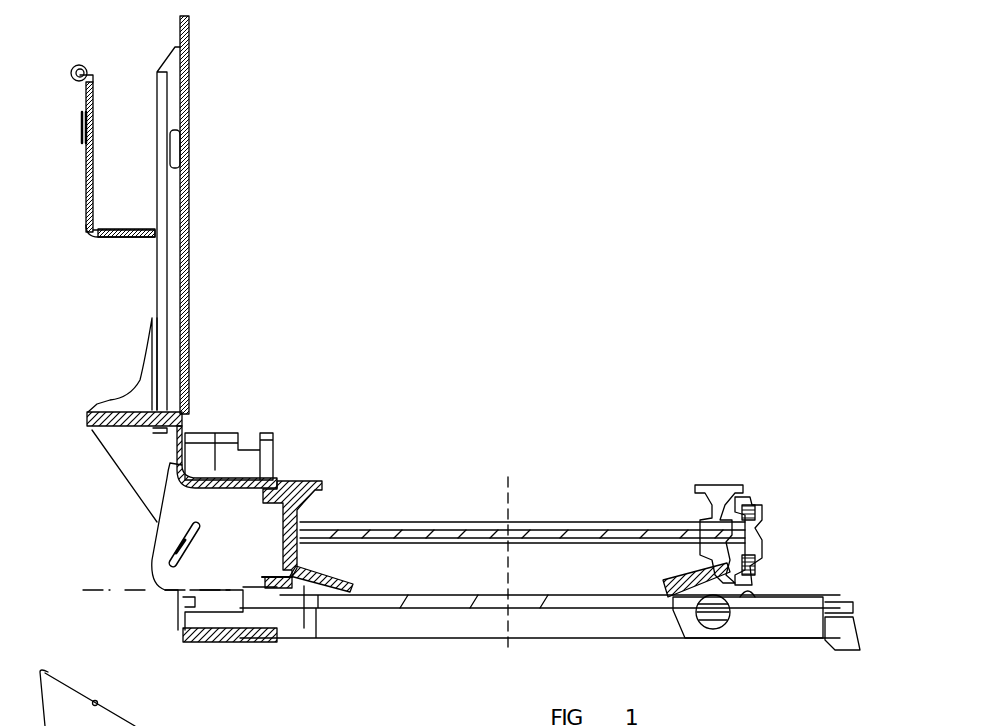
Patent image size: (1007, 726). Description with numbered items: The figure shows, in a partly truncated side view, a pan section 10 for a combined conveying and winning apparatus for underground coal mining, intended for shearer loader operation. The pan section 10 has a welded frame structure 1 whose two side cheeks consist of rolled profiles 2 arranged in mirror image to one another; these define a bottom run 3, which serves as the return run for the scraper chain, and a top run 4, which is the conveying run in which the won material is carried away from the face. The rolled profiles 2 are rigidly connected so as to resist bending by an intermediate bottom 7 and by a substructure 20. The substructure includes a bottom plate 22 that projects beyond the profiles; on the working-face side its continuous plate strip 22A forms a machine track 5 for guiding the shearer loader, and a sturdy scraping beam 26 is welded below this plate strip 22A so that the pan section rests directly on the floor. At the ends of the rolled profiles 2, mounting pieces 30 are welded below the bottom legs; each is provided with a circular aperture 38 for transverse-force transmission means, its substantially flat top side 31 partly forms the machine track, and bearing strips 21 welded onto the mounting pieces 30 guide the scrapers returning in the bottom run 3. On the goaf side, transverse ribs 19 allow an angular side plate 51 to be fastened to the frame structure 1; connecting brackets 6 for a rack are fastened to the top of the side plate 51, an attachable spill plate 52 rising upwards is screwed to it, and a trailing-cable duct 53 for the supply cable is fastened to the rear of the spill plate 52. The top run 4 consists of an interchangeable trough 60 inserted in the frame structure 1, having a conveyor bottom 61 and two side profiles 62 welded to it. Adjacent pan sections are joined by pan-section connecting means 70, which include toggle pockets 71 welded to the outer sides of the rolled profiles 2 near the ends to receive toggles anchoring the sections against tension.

The welded frame structure 1 is at (594, 448).
The rolled profiles 2 is at (268, 538).
The bottom run 3 is at (482, 581).
The top run 4 is at (545, 489).
The machine track 5 is at (812, 562).
The connecting brackets 6 is at (216, 460).
The intermediate bottom 7 is at (445, 530).
The pan section 10 is at (668, 218).
The transverse ribs 19 is at (170, 514).
The substructure 20 is at (388, 640).
The bearing strips 21 is at (325, 580).
The bottom plate 22 is at (385, 598).
The continuous plate strip 22A is at (840, 600).
The scraping beam 26 is at (845, 640).
The mounting pieces 30 is at (773, 622).
The top sides of the mounting pieces 31 is at (793, 600).
The aperture 38 is at (712, 622).
The side plate 51 is at (178, 462).
The attachable spill plate 52 is at (172, 186).
The trailing-cable duct 53 is at (108, 196).
The interchangeable trough 60 is at (657, 470).
The conveyor bottom 61 is at (380, 522).
The side profiles 62 is at (303, 482).
The pan-section connecting means 70 is at (795, 518).
The toggle pockets 71 is at (760, 512).